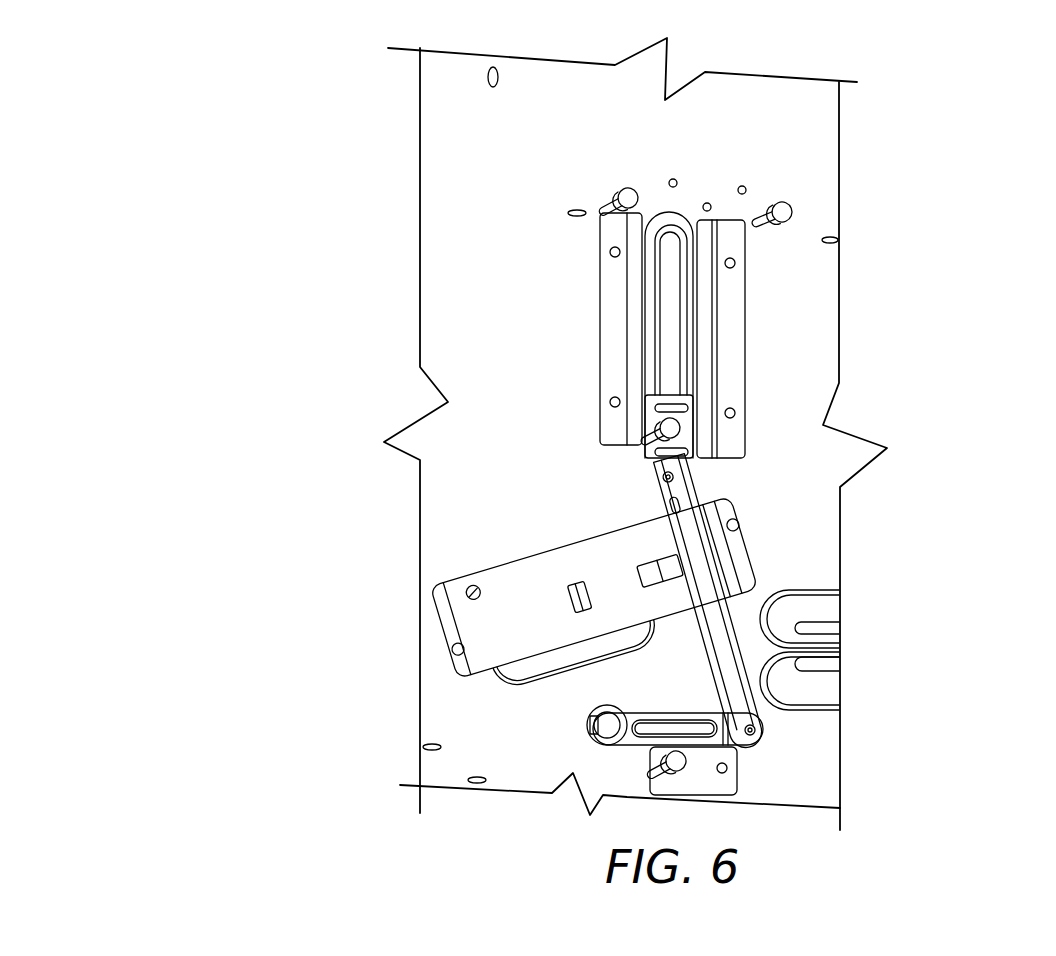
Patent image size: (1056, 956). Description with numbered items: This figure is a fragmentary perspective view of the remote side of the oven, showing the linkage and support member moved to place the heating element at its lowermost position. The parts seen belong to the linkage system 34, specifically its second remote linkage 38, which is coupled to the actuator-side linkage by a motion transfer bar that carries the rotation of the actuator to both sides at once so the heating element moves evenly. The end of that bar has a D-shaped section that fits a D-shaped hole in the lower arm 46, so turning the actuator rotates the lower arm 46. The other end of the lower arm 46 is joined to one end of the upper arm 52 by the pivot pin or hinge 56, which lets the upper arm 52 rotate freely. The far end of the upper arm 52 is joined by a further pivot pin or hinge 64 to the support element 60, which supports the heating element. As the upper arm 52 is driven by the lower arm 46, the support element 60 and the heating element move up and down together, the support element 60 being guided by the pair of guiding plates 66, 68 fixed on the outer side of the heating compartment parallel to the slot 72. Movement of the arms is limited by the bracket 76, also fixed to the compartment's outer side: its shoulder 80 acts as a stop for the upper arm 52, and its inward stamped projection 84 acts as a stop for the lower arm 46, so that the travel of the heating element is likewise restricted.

The linkage system 34 is at (537, 708).
The second remote linkage 38 is at (768, 790).
The lower arm 46 is at (636, 748).
The upper arm 52 is at (638, 587).
The pivot pin or hinge 56 is at (762, 733).
The support element 60 is at (690, 395).
The pivot pin or hinge 64 is at (665, 480).
The guiding plate 66 is at (671, 315).
The guiding plate 68 is at (600, 357).
The slot 72 is at (673, 347).
The bracket 76 is at (543, 555).
The shoulder 80 is at (722, 555).
The inward stamped projection 84 is at (460, 636).